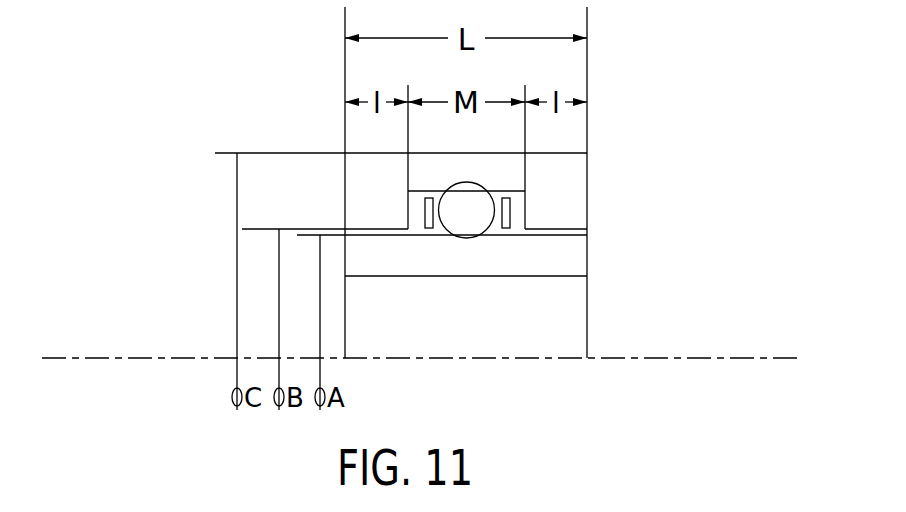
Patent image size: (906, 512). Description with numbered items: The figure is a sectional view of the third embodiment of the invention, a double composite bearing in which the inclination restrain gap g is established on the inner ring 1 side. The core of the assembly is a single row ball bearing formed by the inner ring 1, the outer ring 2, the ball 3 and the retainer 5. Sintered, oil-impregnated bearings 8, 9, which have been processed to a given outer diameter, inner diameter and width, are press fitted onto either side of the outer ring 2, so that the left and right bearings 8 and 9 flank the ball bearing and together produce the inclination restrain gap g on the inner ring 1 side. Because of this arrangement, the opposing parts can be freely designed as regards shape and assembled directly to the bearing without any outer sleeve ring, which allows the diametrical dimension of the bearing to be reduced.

The inner ring 1 is at (575, 268).
The outer ring 2 is at (476, 172).
The ball 3 is at (463, 233).
The retainer 5 is at (505, 222).
The sintered, oil-impregnated bearing 8 is at (365, 198).
The sintered, oil-impregnated bearing 9 is at (570, 210).
The inclination restrain gap g is at (302, 232).